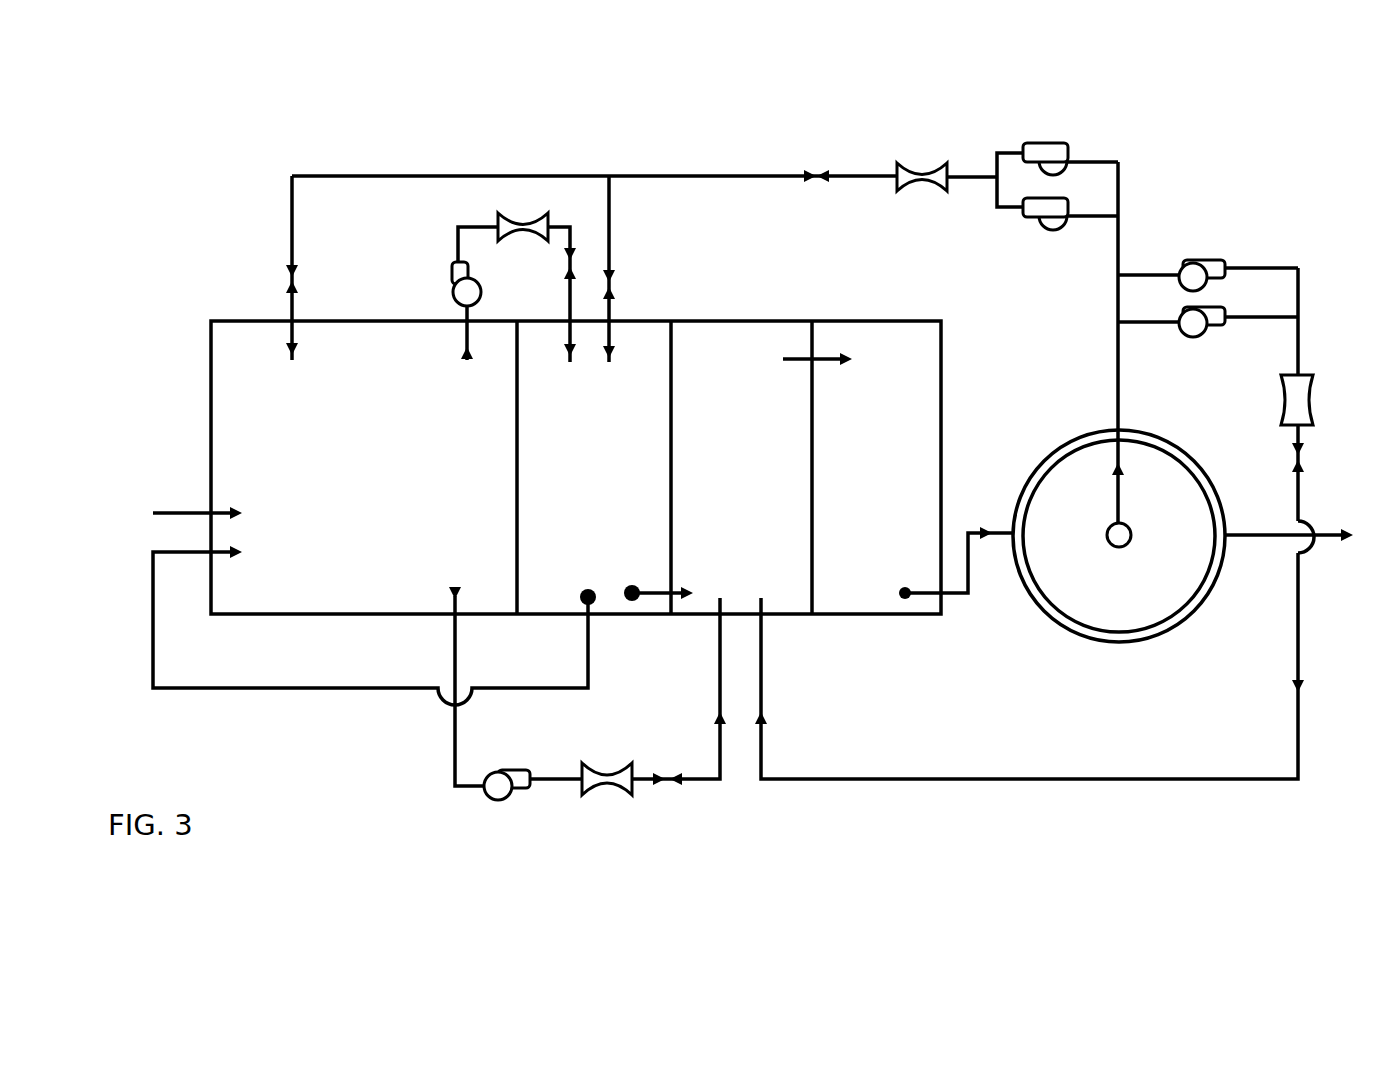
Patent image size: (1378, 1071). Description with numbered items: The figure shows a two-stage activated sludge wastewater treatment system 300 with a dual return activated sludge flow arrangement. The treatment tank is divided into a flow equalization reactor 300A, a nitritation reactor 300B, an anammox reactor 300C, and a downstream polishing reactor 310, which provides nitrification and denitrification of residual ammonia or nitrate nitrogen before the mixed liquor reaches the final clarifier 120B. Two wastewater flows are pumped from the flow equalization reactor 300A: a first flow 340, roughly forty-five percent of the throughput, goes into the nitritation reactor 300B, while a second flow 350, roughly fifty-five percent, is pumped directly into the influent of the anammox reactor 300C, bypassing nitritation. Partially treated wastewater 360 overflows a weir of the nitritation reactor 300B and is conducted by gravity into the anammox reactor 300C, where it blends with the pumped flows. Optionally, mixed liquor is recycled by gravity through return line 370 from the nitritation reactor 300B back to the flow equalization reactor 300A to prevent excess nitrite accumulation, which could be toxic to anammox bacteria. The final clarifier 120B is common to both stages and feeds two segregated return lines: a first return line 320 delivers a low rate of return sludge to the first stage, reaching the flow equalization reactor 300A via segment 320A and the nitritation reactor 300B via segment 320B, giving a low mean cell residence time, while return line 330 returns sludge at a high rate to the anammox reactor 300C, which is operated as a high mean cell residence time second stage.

The activated sludge wastewater treatment system 300 is at (263, 318).
The flow equalization (FEB) reactor 300A is at (437, 467).
The nitritation reactor 300B is at (610, 467).
The anammox reactor 300C is at (755, 467).
The polishing reactor 310 is at (846, 429).
The first return line 320 is at (853, 173).
The return line segment 320A is at (290, 223).
The return line segment 320B is at (613, 223).
The return line 330 is at (965, 777).
The first flow 340 is at (477, 223).
The second flow 350 is at (452, 753).
The partially treated wastewater 360 is at (651, 603).
The return line 370 is at (305, 698).
The final activated sludge clarifier 120B is at (1183, 623).